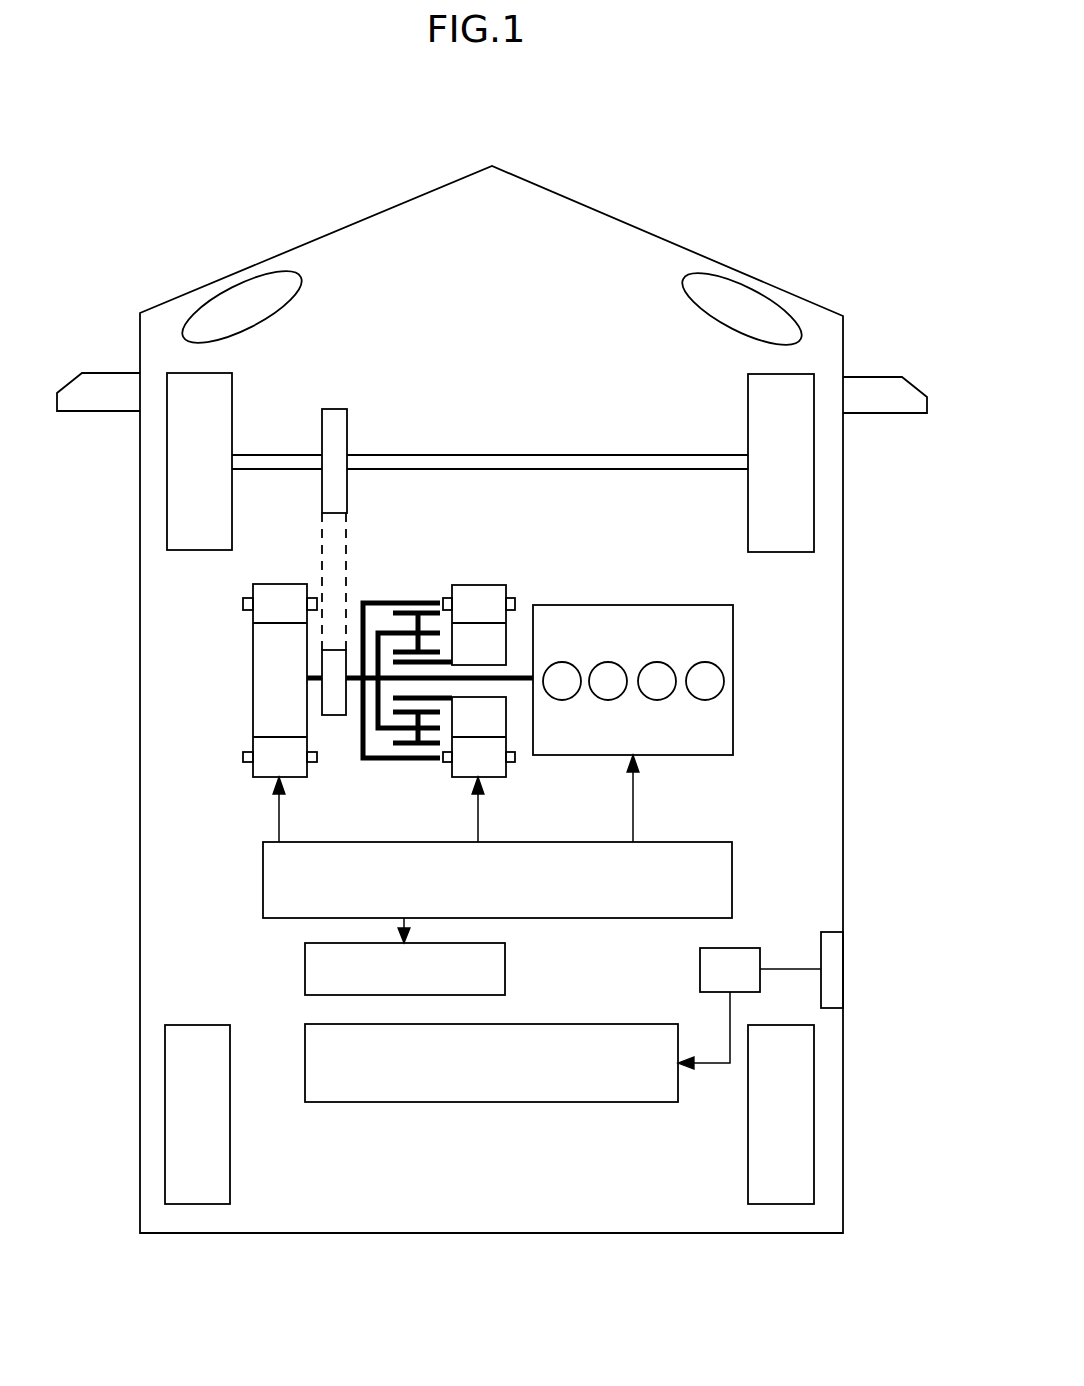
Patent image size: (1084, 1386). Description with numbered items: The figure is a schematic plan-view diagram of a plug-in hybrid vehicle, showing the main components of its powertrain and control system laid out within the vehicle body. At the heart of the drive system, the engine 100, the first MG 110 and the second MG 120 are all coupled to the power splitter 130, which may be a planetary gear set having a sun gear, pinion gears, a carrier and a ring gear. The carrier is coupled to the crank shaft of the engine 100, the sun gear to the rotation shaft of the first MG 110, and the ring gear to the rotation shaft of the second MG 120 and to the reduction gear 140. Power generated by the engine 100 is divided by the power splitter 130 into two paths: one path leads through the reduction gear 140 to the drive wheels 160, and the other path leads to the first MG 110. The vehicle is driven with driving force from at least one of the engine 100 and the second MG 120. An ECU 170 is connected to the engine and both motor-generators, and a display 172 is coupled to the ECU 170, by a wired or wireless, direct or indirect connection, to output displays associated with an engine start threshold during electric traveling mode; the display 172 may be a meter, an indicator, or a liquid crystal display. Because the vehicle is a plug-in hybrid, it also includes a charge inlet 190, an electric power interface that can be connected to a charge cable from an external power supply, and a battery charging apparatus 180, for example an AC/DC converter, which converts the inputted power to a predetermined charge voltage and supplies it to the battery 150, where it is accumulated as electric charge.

The engine 100 is at (580, 605).
The first MG 110 is at (482, 583).
The second MG 120 is at (253, 668).
The power splitter 130 is at (400, 602).
The reduction gear 140 is at (330, 387).
The battery 150 is at (540, 1024).
The drive wheels 160 is at (167, 470).
The ECU 170 is at (263, 882).
The display 172 is at (305, 973).
The battery charging apparatus 180 is at (730, 948).
The charge inlet 190 is at (843, 965).